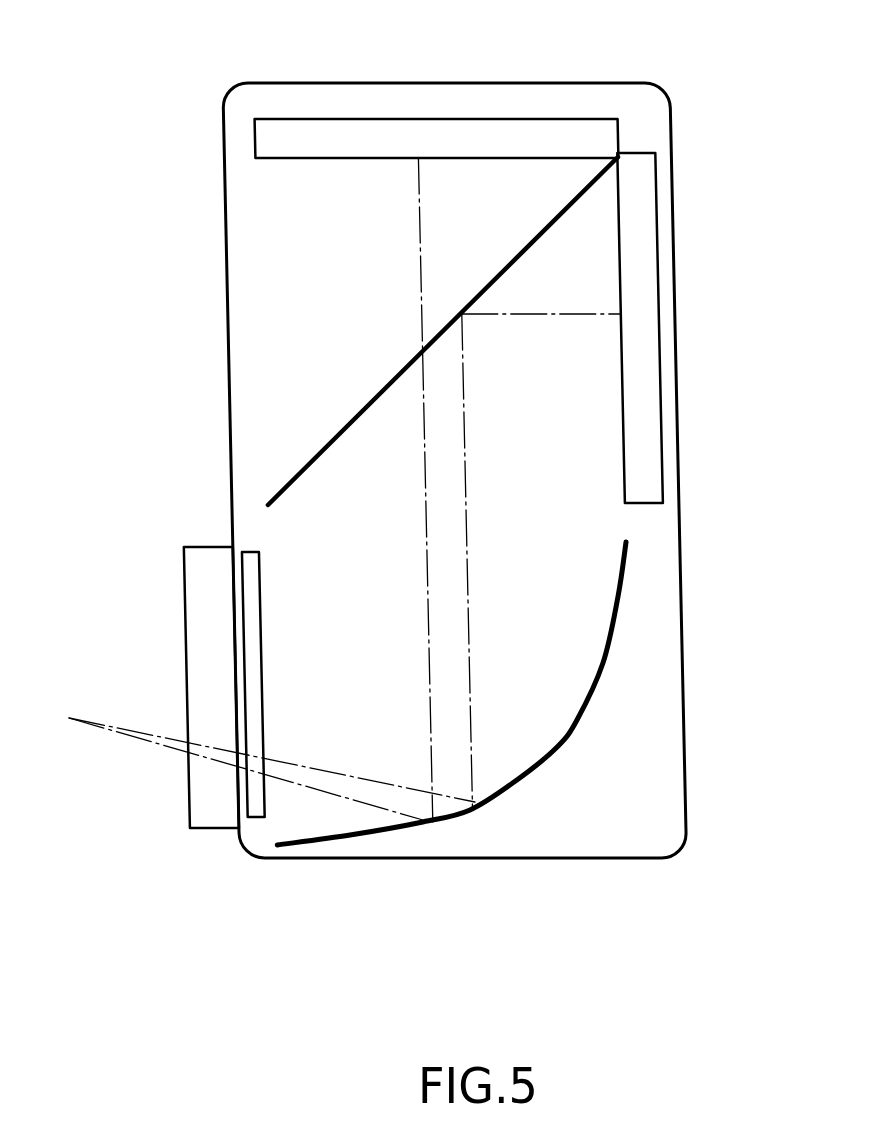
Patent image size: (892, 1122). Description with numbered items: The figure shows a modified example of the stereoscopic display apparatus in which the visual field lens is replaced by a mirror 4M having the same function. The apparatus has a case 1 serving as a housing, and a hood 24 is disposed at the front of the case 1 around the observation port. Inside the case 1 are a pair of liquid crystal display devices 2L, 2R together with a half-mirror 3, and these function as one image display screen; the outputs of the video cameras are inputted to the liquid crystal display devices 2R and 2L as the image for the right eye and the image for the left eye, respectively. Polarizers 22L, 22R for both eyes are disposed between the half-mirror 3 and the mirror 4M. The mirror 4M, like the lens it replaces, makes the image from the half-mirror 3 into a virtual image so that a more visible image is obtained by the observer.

The case 1 is at (484, 82).
The liquid crystal display device 2L is at (452, 135).
The liquid crystal display device 2R is at (657, 210).
The half-mirror 3 is at (573, 193).
The mirror 4M is at (557, 747).
The polarizer 22L is at (195, 739).
The polarizer 22R is at (257, 818).
The hood 24 is at (210, 547).